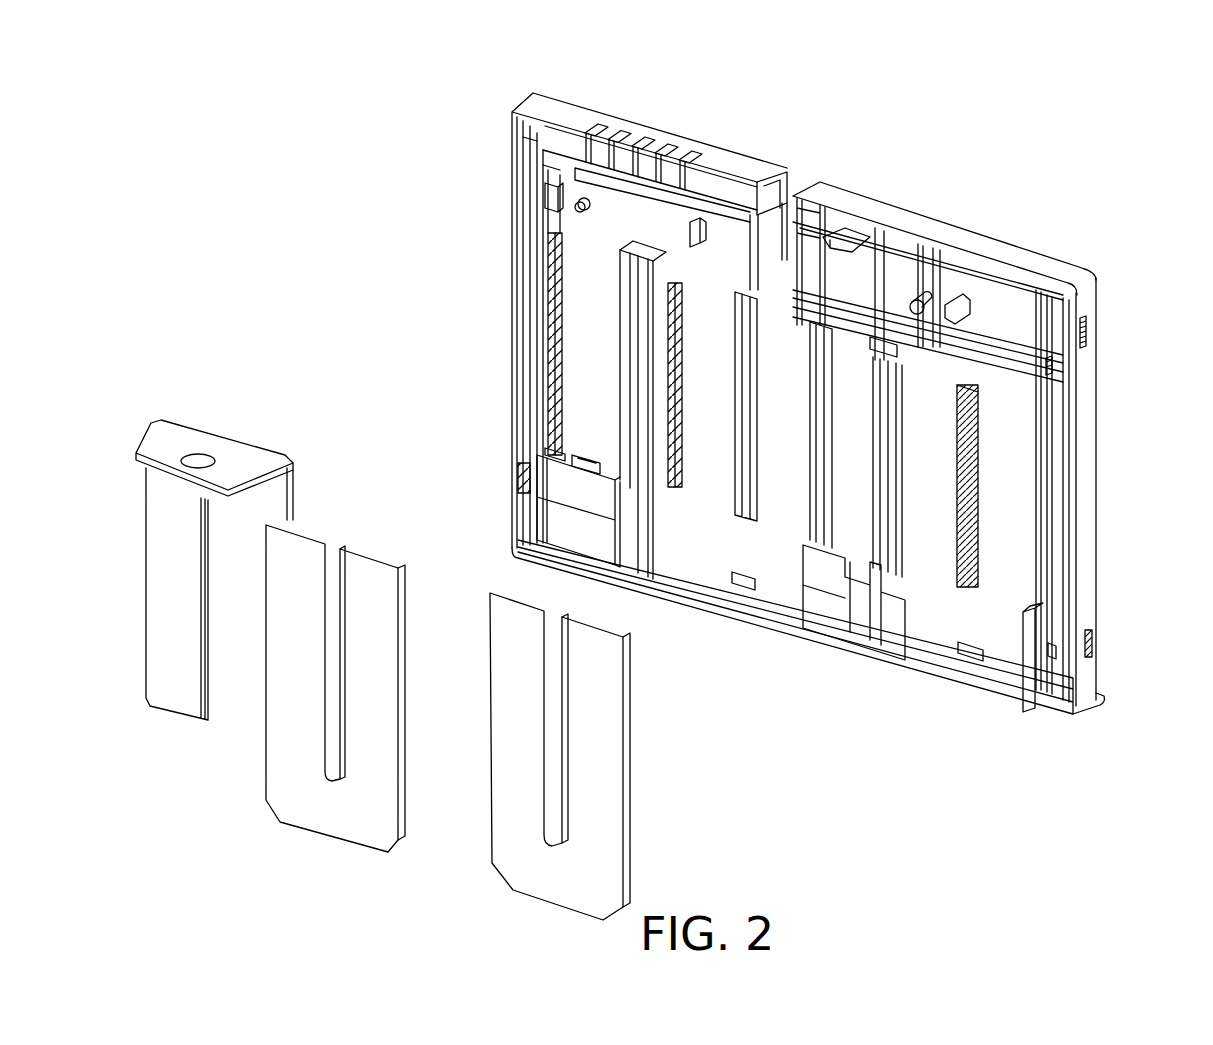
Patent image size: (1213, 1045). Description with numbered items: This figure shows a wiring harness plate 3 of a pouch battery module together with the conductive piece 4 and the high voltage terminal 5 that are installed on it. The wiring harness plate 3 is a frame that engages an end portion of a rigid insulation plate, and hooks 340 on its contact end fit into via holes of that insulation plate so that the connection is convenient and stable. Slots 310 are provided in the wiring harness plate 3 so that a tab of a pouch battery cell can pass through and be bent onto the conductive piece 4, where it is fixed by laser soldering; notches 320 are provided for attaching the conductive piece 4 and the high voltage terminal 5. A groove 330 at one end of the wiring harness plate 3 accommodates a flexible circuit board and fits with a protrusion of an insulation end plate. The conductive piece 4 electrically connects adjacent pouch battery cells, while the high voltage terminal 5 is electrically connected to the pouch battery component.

The wiring harness plate 3 is at (548, 107).
The slot 310 is at (1003, 480).
The notch 320 is at (1045, 367).
The groove 330 is at (787, 197).
The hook 340 is at (1085, 325).
The conductive piece 4 is at (290, 575).
The high voltage terminal 5 is at (185, 450).